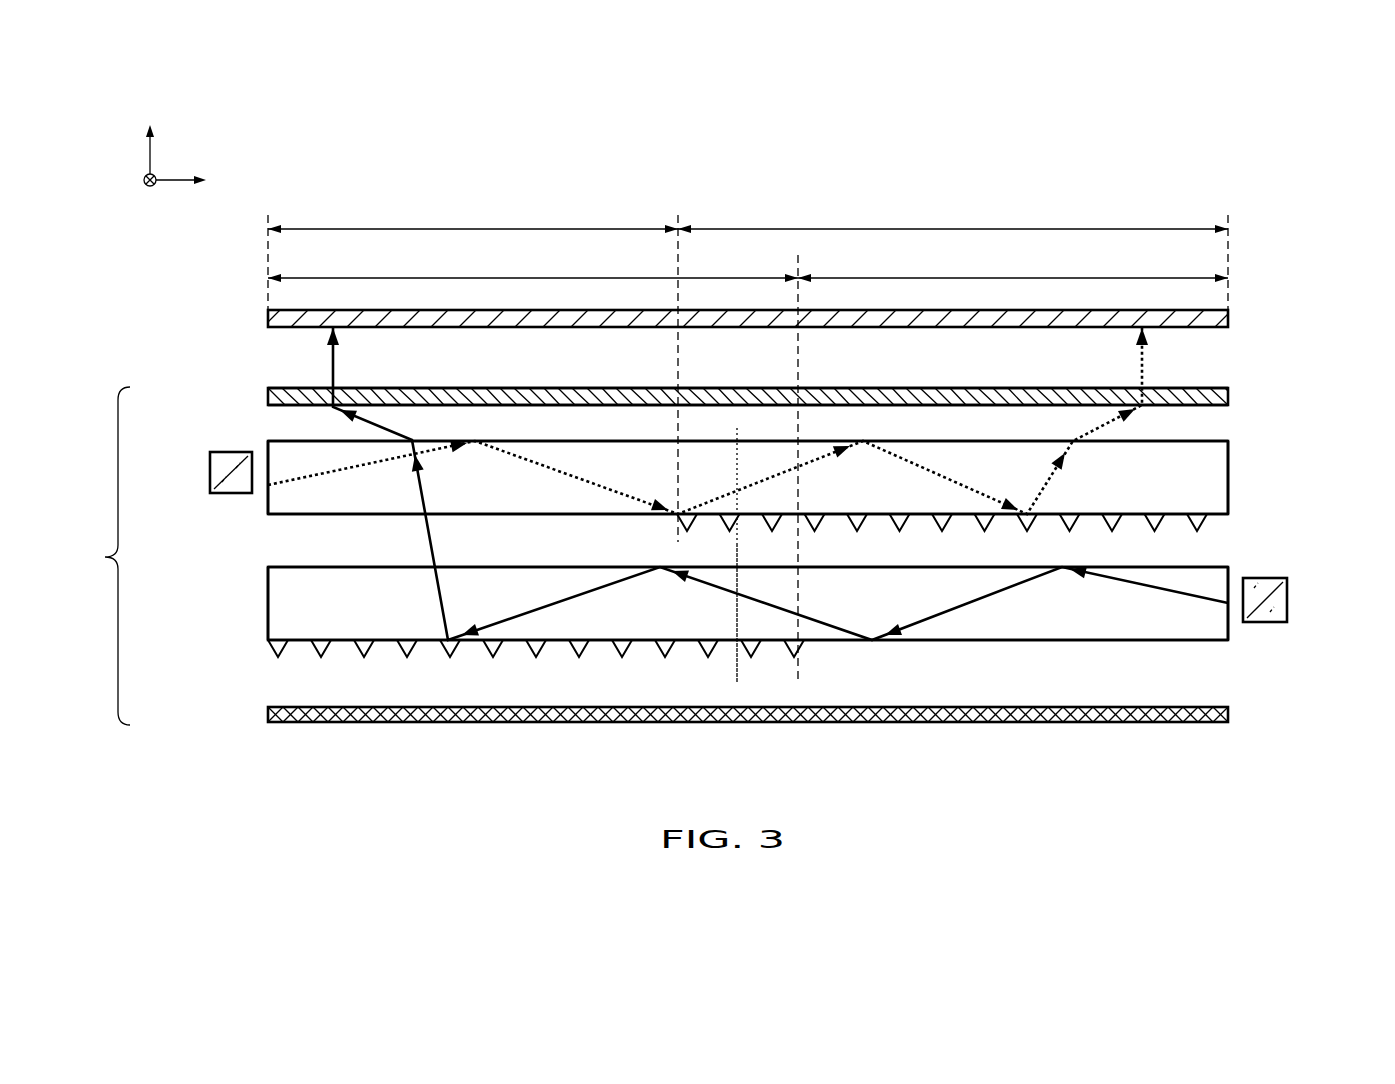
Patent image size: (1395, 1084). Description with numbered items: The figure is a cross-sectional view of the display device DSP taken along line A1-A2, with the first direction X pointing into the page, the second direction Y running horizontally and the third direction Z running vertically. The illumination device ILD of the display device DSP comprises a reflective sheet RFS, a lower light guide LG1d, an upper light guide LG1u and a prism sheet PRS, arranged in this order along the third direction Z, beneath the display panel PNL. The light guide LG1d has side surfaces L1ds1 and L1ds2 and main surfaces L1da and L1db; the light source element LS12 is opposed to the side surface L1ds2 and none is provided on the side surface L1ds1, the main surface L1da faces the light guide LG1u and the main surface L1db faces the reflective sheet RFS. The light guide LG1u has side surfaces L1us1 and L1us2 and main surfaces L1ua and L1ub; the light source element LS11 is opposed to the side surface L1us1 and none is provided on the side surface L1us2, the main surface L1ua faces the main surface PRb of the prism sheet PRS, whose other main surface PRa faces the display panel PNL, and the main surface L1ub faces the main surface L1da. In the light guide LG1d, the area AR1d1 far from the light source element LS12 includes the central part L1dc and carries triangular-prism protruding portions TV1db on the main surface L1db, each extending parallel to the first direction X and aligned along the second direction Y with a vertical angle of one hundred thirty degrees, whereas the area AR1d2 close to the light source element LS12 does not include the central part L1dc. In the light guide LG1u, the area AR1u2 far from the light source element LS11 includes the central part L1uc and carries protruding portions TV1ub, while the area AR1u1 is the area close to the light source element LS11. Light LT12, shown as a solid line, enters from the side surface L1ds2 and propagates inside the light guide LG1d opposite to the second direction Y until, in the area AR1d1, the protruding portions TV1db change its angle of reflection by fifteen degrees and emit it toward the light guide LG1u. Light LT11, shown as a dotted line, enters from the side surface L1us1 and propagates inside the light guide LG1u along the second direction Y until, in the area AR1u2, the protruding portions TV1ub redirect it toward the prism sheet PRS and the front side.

The display device DSP is at (1136, 135).
The display panel PNL is at (1229, 318).
The prism sheet PRS is at (1229, 396).
The main surface PRa is at (410, 387).
The main surface PRb is at (571, 406).
The light guide LG1u is at (1229, 472).
The light guide LG1d is at (275, 598).
The light source element LS11 is at (209, 470).
The light source element LS12 is at (1290, 596).
The light LT11 is at (320, 483).
The light LT12 is at (331, 361).
The side surface L1us1 is at (267, 505).
The side surface L1us2 is at (1229, 495).
The side surface L1ds1 is at (267, 628).
The side surface L1ds2 is at (1229, 626).
The main surface L1ua is at (977, 440).
The main surface L1ub is at (565, 516).
The central part L1uc is at (740, 437).
The main surface L1da is at (477, 566).
The main surface L1db is at (1077, 642).
The central part L1dc is at (738, 566).
The protruding portions TV1ub is at (905, 524).
The protruding portions TV1db is at (370, 657).
The illumination device ILD is at (96, 556).
The reflective sheet RFS is at (267, 716).
The area AR1u1 is at (473, 255).
The area AR1u2 is at (953, 371).
The area AR1d1 is at (533, 466).
The area AR1d2 is at (1013, 266).
The line A1-A2 end A1 is at (256, 736).
The line A1-A2 end A2 is at (1243, 737).
The first direction X is at (140, 188).
The second direction Y is at (191, 182).
The third direction Z is at (150, 135).